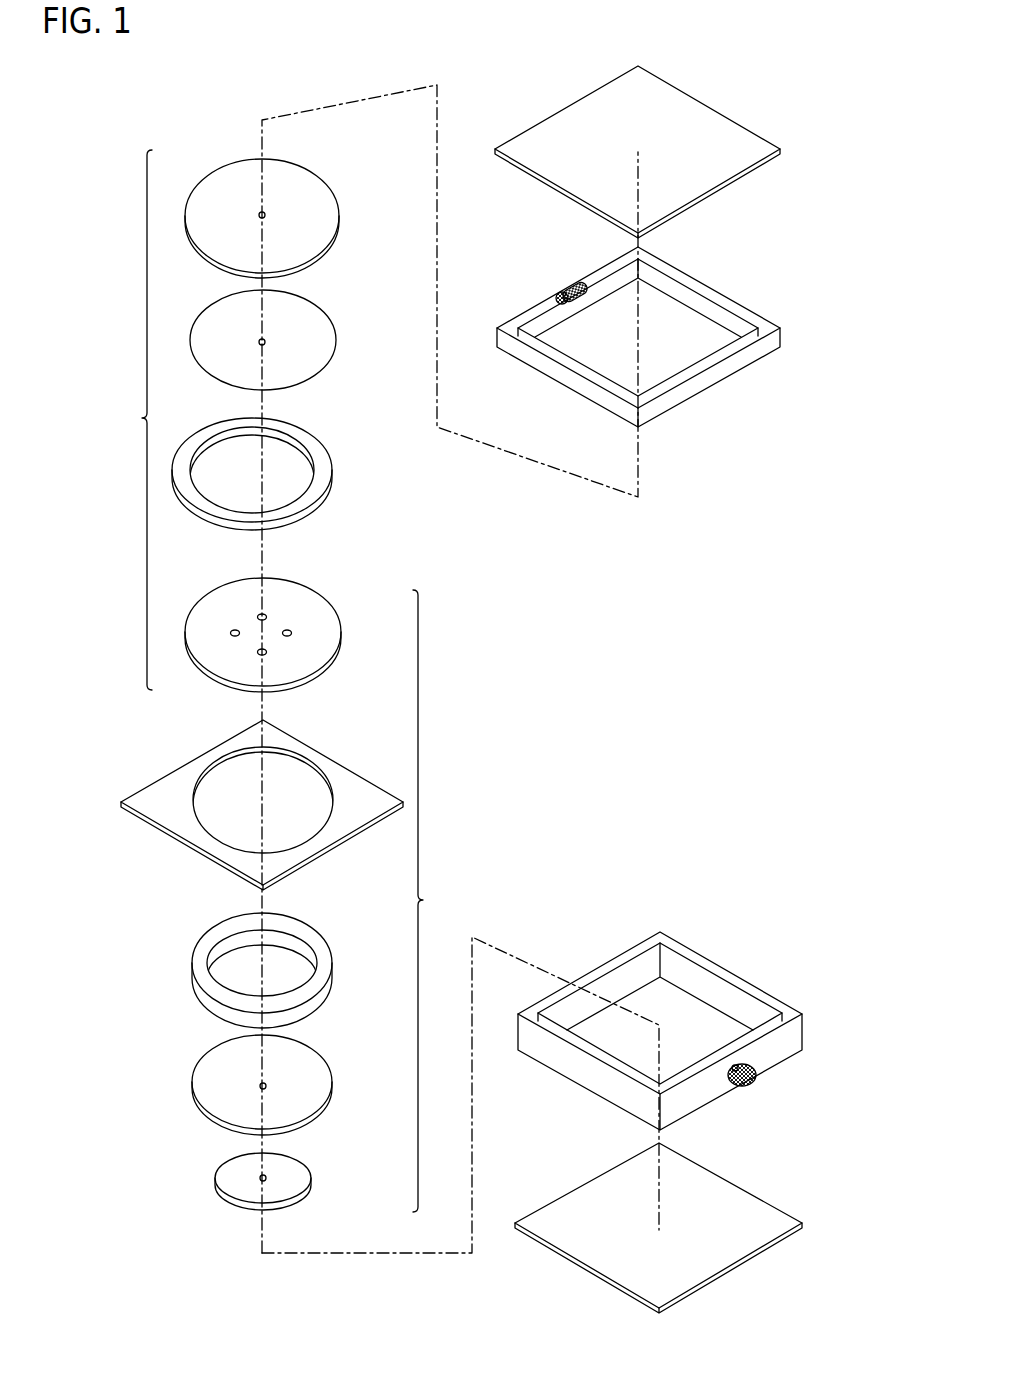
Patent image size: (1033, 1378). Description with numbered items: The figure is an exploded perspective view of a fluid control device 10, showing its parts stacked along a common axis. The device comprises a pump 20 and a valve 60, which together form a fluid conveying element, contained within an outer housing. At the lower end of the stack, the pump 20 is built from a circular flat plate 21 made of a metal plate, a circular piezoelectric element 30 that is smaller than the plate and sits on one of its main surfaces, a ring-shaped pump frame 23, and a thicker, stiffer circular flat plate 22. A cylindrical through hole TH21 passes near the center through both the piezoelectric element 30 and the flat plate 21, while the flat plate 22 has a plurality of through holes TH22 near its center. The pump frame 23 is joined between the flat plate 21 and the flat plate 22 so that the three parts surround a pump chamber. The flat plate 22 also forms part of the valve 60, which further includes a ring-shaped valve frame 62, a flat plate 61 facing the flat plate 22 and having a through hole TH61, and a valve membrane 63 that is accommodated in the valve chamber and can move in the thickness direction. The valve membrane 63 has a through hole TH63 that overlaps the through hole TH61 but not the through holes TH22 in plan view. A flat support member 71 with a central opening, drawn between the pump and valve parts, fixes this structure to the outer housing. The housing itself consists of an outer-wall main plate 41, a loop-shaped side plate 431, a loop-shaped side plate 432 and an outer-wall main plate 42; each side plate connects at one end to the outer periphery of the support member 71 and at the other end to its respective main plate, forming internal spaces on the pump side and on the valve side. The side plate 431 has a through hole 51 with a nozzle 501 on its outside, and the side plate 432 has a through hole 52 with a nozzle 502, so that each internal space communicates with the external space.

The fluid control device 10 is at (817, 96).
The pump 20 is at (434, 901).
The flat plate 21 is at (325, 1088).
The flat plate 22 is at (325, 637).
The pump frame 23 is at (322, 973).
The piezoelectric element 30 is at (298, 1175).
The outer-wall main plate 41 is at (753, 1210).
The outer-wall main plate 42 is at (766, 150).
The through hole 51 is at (733, 1087).
The through hole 52 is at (602, 287).
The valve 60 is at (130, 420).
The flat plate 61 is at (217, 188).
The valve frame 62 is at (193, 448).
The valve membrane 63 is at (208, 323).
The support member 71 is at (155, 788).
The side plate 431 is at (790, 1037).
The side plate 432 is at (767, 343).
The nozzle 501 is at (757, 1073).
The nozzle 502 is at (558, 292).
The through hole TH21 is at (261, 1176).
The through holes TH22 is at (239, 630).
The through hole TH61 is at (266, 212).
The through hole TH63 is at (266, 339).